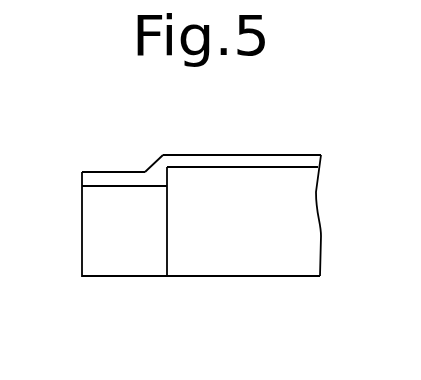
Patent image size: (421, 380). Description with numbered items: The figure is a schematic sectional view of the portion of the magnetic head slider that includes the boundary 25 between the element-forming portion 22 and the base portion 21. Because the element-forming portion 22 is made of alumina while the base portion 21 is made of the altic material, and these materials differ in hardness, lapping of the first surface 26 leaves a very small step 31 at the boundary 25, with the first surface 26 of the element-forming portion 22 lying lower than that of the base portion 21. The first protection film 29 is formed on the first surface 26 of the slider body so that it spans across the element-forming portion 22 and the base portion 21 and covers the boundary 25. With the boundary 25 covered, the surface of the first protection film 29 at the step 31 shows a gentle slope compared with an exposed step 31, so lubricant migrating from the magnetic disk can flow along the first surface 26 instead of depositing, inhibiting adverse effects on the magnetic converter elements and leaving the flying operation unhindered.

The base portion 21 is at (263, 260).
The element-forming portion 22 is at (115, 260).
The boundary 25 is at (167, 243).
The first surface 26 is at (99, 184).
The first protection film 29 is at (293, 160).
The step 31 is at (165, 178).